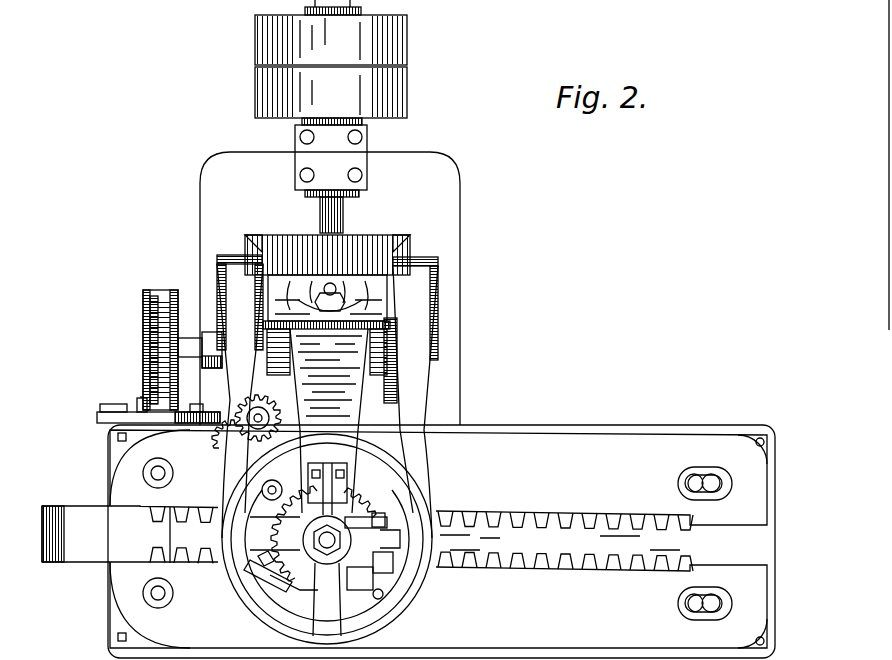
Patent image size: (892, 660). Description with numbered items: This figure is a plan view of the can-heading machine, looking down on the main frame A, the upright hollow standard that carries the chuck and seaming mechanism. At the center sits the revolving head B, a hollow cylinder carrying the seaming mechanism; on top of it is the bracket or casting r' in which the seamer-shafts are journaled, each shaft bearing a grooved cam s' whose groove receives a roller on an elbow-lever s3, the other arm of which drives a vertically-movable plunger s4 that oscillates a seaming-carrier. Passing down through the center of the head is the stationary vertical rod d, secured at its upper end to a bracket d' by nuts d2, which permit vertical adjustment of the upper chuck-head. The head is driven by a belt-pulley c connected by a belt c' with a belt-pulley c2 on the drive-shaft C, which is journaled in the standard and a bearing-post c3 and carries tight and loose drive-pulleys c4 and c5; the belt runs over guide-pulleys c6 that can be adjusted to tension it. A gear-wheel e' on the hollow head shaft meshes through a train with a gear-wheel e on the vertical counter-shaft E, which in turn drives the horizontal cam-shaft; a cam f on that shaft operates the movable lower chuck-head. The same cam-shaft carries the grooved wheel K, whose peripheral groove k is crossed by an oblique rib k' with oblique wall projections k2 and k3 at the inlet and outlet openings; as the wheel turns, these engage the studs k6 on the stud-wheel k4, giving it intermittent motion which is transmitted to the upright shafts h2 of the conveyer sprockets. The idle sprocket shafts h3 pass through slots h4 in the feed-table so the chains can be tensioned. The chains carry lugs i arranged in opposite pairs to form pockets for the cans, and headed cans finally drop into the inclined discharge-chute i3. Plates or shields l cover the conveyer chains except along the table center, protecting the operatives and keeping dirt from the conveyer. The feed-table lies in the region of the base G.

The main frame A is at (330, 288).
The revolving head B is at (403, 606).
The drive-shaft C is at (323, 215).
The belt-pulley c is at (300, 438).
The belt c' is at (424, 402).
The belt-pulley c2 is at (383, 243).
The bearing-post c3 is at (352, 158).
The tight drive-pulley c4 is at (331, 92).
The loose drive-pulley c5 is at (331, 40).
The guide-pulleys c6 is at (217, 283).
The stationary vertical rod d is at (347, 540).
The bracket d' is at (327, 473).
The nuts d2 is at (293, 577).
The vertical counter-shaft E is at (259, 418).
The gear-wheel e is at (216, 437).
The gear-wheel e' is at (323, 546).
The cam f is at (398, 403).
The bearing block F' is at (200, 335).
The base G is at (735, 528).
The upright shafts h2 is at (151, 473).
The upright shafts h3 is at (709, 480).
The slots h4 is at (678, 483).
The lugs i is at (585, 528).
The inclined discharge-chute i3 is at (106, 534).
The grooved wheel K is at (148, 330).
The peripheral groove k is at (133, 350).
The oblique rib k' is at (126, 394).
The oblique groove-wall projection k2 is at (190, 403).
The oblique groove-wall projection k3 is at (140, 397).
The stud-wheel k4 is at (97, 417).
The studs k6 is at (117, 417).
The plates or shields l is at (438, 539).
The bracket or casting r' is at (318, 514).
The grooved cam s' is at (370, 581).
The elbow-lever s3 is at (250, 565).
The vertically-movable plunger s4 is at (381, 598).